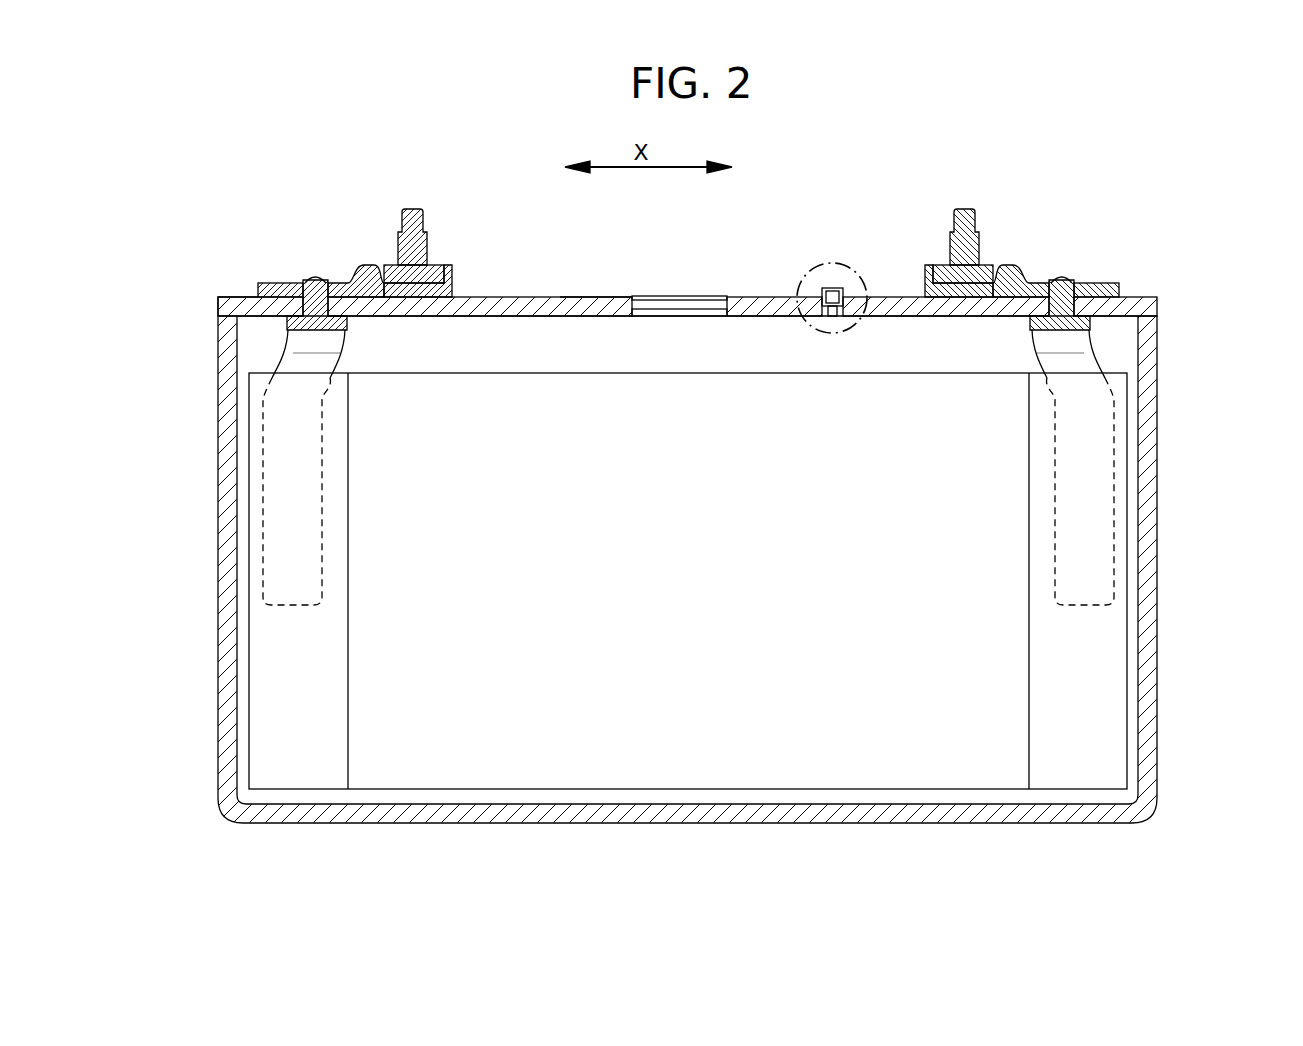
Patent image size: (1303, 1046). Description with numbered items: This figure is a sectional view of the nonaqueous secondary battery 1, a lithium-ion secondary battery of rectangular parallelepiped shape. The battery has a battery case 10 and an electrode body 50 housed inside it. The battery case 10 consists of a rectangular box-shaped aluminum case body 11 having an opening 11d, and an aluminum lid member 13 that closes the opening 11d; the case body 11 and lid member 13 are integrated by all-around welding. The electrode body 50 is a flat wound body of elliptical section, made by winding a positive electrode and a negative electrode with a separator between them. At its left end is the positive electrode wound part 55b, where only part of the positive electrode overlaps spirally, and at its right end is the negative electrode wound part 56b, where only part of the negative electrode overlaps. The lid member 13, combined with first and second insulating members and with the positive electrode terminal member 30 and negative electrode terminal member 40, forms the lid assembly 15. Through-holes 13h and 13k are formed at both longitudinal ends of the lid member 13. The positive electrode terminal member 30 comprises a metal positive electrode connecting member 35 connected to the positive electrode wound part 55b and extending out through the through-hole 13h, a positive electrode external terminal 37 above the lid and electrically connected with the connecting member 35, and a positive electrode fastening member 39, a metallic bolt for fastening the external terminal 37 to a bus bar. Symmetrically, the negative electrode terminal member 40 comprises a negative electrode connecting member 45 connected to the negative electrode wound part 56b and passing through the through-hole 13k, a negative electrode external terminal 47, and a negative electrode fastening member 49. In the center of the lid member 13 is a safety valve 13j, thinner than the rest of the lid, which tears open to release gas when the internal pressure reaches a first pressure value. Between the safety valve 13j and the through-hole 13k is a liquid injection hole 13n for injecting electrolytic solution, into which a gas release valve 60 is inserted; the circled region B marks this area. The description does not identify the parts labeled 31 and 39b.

The nonaqueous secondary battery 1 is at (762, 208).
The battery case 10 is at (1228, 268).
The case body 11 is at (1150, 365).
The opening 11d is at (245, 305).
The lid member 13 is at (1160, 297).
The through-hole 13h is at (313, 278).
The safety valve 13j is at (676, 296).
The through-hole 13k is at (1068, 283).
The liquid injection hole 13n is at (838, 316).
The lid assembly 15 is at (585, 286).
The positive electrode terminal member 30 is at (370, 250).
The positive electrode rivet 31 is at (300, 328).
The positive electrode connecting member 35 is at (303, 365).
The positive electrode external terminal 37 is at (366, 272).
The positive electrode fastening member 39 is at (412, 209).
The external terminal base portion 39b is at (407, 297).
The negative electrode terminal member 40 is at (996, 250).
The negative electrode connecting member 45 is at (1062, 345).
The negative electrode external terminal 47 is at (1002, 268).
The negative electrode fastening member 49 is at (962, 209).
The electrode body 50 is at (493, 771).
The positive electrode wound part 55b is at (290, 666).
The negative electrode wound part 56b is at (1090, 666).
The gas release valve 60 is at (822, 290).
The detail region B is at (813, 268).